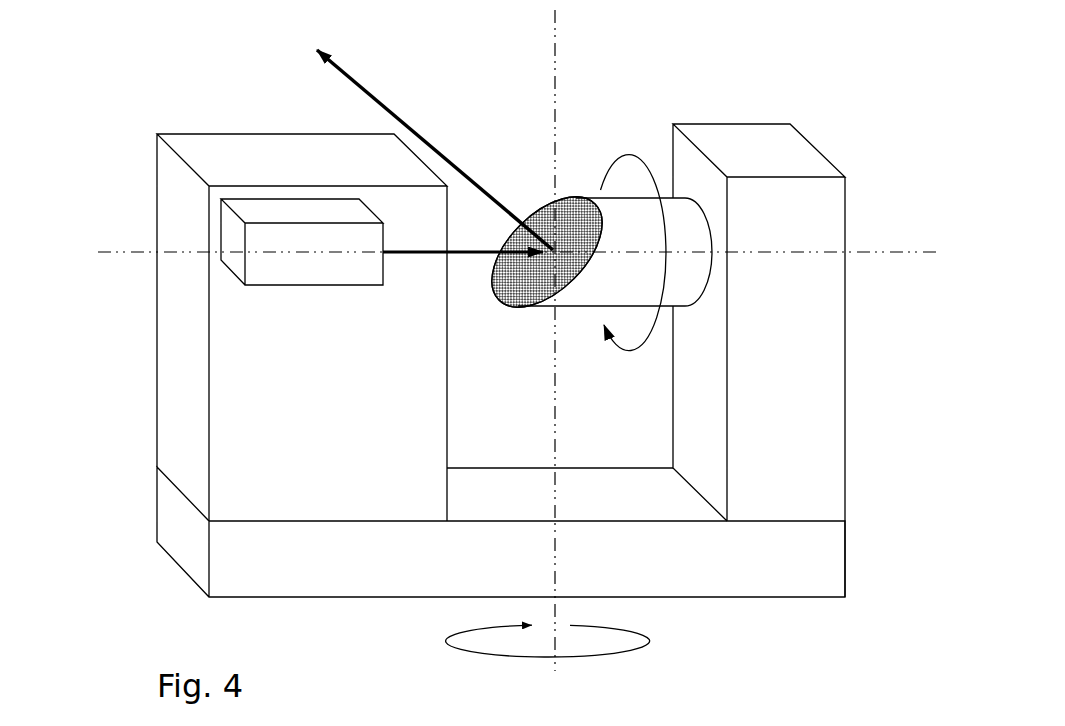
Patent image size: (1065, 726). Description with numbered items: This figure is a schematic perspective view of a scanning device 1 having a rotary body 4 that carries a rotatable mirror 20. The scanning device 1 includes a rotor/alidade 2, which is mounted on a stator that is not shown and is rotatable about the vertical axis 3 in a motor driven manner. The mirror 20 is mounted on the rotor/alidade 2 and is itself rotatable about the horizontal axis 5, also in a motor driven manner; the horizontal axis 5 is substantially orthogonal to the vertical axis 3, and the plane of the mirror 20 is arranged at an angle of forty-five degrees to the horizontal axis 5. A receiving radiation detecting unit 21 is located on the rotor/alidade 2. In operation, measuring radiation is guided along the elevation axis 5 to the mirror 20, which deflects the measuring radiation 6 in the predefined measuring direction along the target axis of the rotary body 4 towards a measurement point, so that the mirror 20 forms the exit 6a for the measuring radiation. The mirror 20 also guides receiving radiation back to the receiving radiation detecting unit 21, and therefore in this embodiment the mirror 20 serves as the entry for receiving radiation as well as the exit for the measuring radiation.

The scanning device 1 is at (483, 340).
The rotor/alidade 2 is at (176, 566).
The vertical axis 3 is at (558, 52).
The rotary body 4 is at (579, 376).
The horizontal axis 5 is at (122, 255).
The measuring radiation 6 is at (385, 103).
The exit for the measuring radiation 6a is at (498, 303).
The rotatable mirror 20 is at (543, 222).
The receiving radiation detecting unit 21 is at (297, 288).